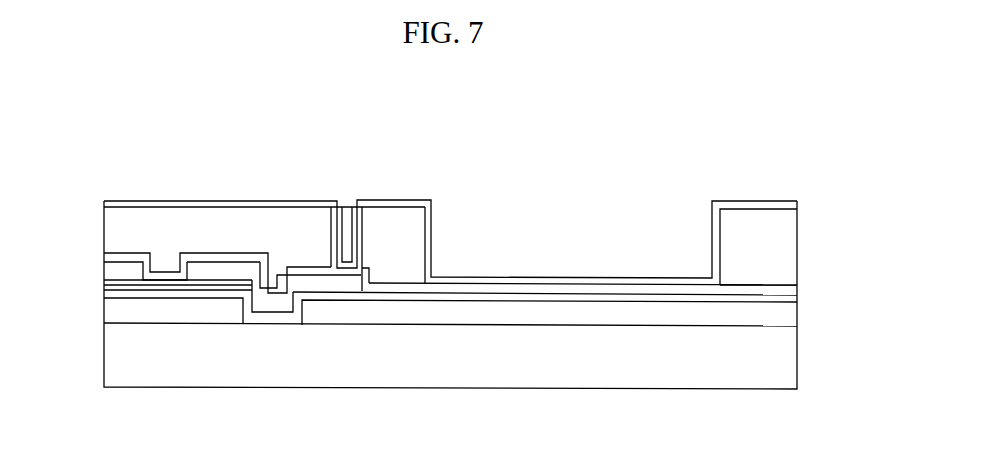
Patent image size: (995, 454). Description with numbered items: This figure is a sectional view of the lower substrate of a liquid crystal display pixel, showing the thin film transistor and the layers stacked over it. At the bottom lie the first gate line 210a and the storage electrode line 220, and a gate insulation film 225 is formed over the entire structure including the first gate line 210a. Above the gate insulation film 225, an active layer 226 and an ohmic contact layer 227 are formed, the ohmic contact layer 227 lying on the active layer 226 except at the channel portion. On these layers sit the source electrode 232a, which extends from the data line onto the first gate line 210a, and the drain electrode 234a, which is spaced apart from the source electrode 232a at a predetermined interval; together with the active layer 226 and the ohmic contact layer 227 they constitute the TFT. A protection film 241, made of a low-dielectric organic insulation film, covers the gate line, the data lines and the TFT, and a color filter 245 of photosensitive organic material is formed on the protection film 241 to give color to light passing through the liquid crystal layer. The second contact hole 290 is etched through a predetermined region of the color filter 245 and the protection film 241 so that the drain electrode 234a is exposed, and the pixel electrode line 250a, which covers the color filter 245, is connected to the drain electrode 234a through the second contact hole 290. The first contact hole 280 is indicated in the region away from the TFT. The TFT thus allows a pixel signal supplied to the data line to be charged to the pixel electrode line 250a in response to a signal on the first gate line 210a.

The storage electrode line 220 is at (797, 318).
The first gate line 210a is at (173, 322).
The gate insulation film 225 is at (104, 298).
The active layer 226 is at (104, 289).
The ohmic contact layer 227 is at (104, 282).
The source electrode 232a is at (104, 266).
The drain electrode 234a is at (228, 270).
The protection film 241 is at (104, 253).
The color filter 245 is at (104, 222).
The pixel electrode line 250a is at (104, 202).
The first contact hole 280 is at (603, 208).
The second contact hole 290 is at (350, 207).